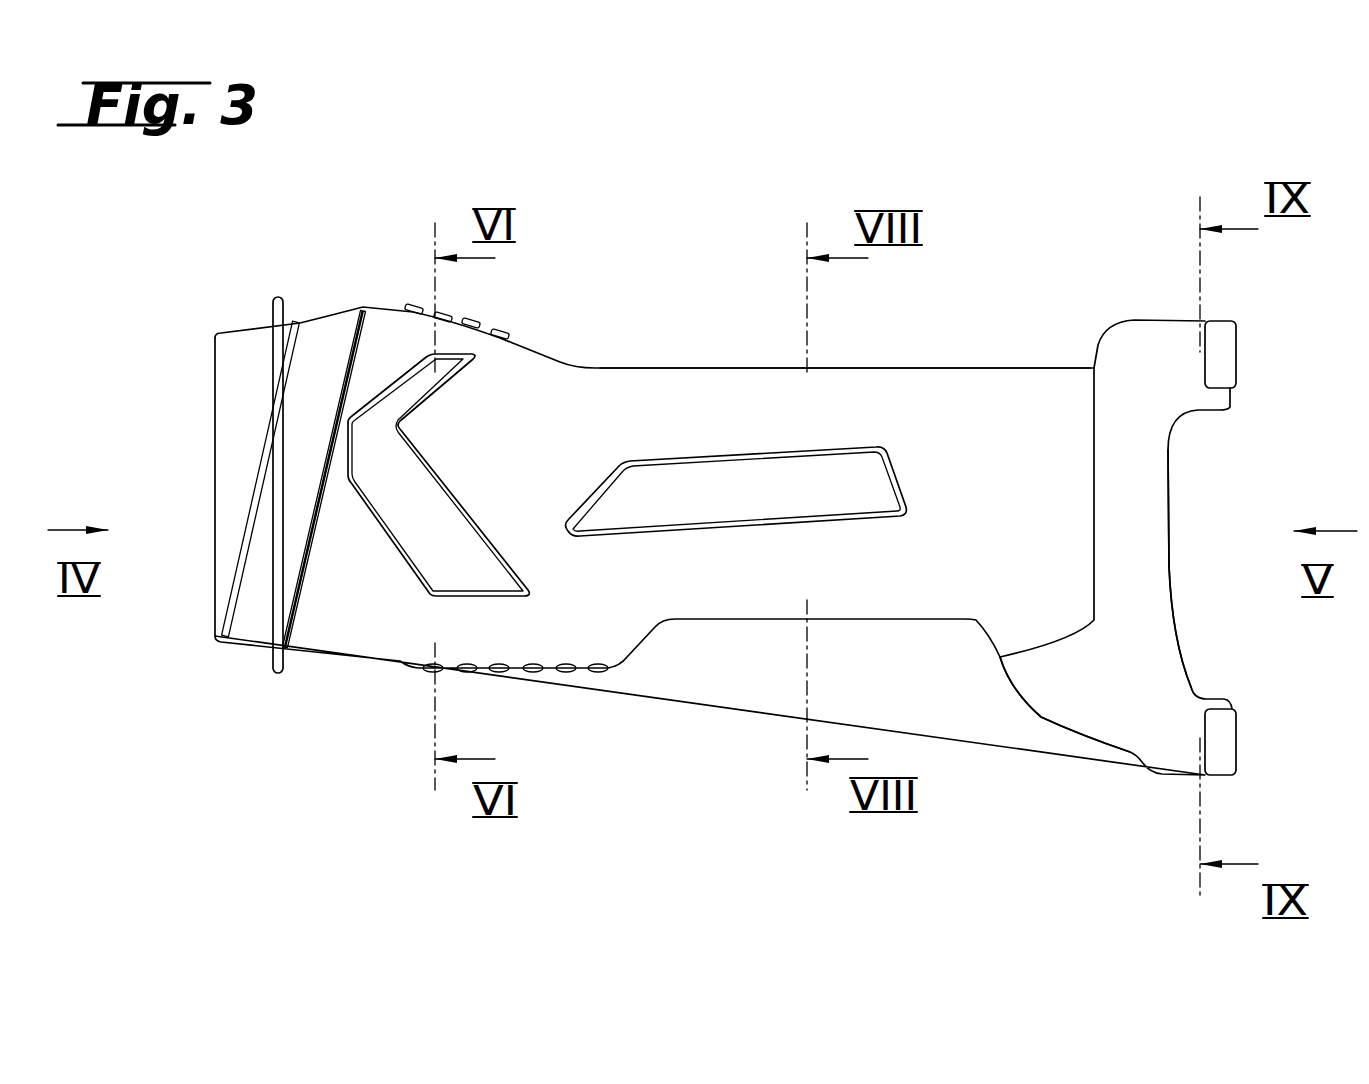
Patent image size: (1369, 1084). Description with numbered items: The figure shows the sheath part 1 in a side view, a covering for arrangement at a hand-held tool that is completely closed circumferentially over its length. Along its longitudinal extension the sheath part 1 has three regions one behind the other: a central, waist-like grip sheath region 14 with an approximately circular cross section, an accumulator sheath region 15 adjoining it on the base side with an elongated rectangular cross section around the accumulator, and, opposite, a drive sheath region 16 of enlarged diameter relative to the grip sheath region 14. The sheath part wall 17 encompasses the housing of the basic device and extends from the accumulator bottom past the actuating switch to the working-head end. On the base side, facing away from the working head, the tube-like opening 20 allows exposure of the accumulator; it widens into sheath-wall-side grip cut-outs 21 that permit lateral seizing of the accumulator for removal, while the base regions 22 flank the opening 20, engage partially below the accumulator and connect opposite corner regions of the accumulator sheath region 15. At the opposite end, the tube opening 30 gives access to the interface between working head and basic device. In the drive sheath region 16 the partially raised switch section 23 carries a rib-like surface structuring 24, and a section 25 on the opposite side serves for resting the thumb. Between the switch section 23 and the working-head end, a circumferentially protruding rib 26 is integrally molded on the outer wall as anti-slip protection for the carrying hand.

The sheath part 1 is at (720, 330).
The grip sheath region 14 is at (757, 572).
The accumulator sheath region 15 is at (1106, 695).
The drive sheath region 16 is at (350, 620).
The sheath part wall 17 is at (972, 368).
The opening 20 is at (1216, 652).
The grip cut-outs 21 is at (1169, 469).
The base regions 22 is at (1235, 350).
The switch section 23 is at (590, 672).
The rib-like surface structuring 24 is at (465, 323).
The section for resting the thumb 25 is at (492, 332).
The rib 26 is at (283, 308).
The opening 30 is at (215, 440).